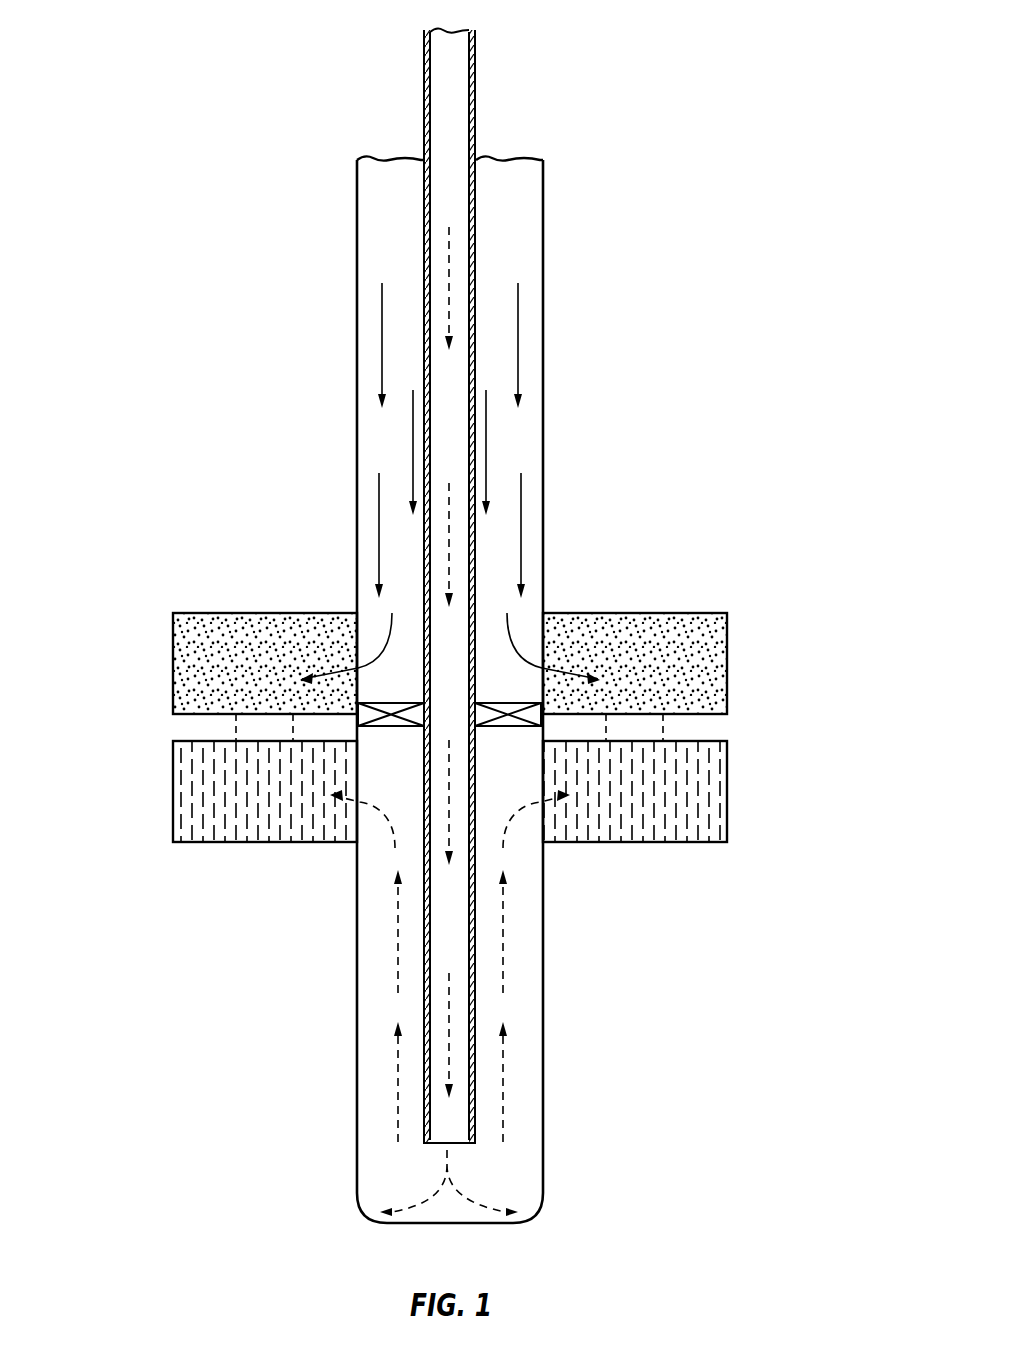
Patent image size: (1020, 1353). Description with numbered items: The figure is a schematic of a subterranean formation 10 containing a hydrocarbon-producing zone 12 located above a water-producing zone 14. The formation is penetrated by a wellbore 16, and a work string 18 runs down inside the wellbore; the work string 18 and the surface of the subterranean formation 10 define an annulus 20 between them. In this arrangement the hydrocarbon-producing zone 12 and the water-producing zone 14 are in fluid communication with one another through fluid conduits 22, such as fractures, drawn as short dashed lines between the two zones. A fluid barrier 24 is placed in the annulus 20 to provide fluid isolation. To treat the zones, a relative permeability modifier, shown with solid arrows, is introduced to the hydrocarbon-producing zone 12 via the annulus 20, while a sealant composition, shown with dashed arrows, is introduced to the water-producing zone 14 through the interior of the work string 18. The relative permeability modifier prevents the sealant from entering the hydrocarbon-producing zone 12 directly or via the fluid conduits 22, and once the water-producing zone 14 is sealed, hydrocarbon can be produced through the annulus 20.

The subterranean formation 10 is at (140, 215).
The hydrocarbon-producing zone 12 is at (697, 650).
The water-producing zone 14 is at (720, 772).
The wellbore 16 is at (544, 301).
The work string 18 is at (442, 70).
The annulus 20 is at (507, 171).
The fluid conduits 22 is at (667, 739).
The fluid barrier 24 is at (373, 728).